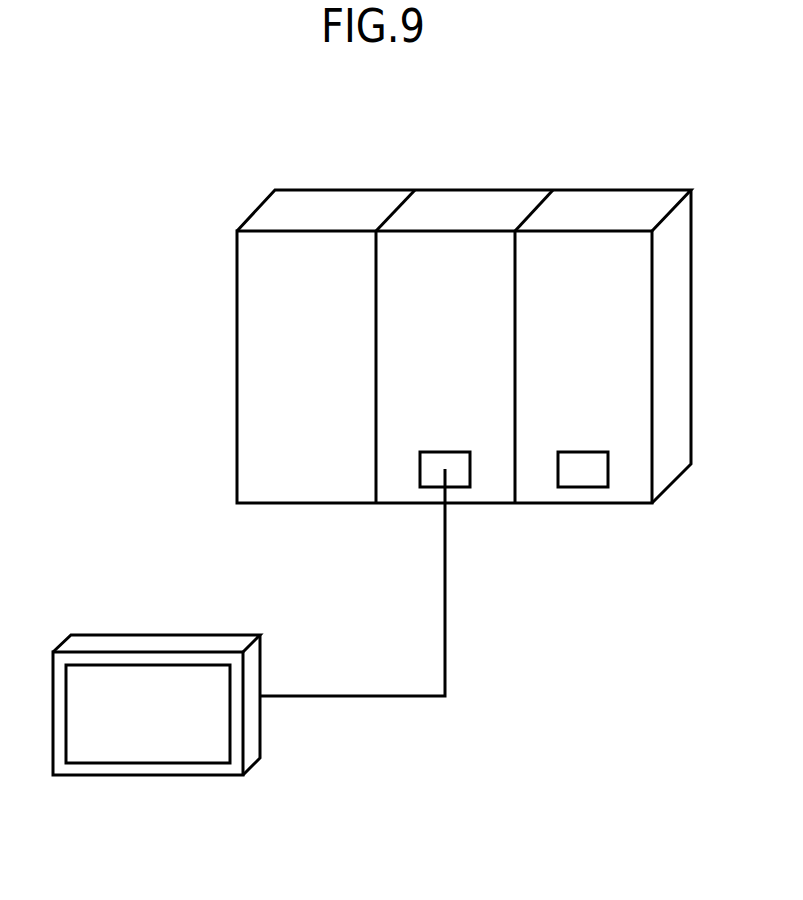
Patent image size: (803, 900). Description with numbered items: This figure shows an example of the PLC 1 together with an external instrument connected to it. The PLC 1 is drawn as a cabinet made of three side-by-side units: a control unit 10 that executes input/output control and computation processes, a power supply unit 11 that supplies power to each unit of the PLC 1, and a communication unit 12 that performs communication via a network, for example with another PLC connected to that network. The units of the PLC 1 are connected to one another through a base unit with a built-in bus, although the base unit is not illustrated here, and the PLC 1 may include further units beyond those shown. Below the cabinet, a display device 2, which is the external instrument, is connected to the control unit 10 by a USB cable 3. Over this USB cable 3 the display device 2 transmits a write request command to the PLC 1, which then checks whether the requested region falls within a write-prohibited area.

The PLC 1 is at (584, 160).
The control unit 10 is at (497, 190).
The power supply unit 11 is at (358, 190).
The communication unit 12 is at (635, 190).
The display device 2 is at (203, 635).
The USB cable 3 is at (445, 580).